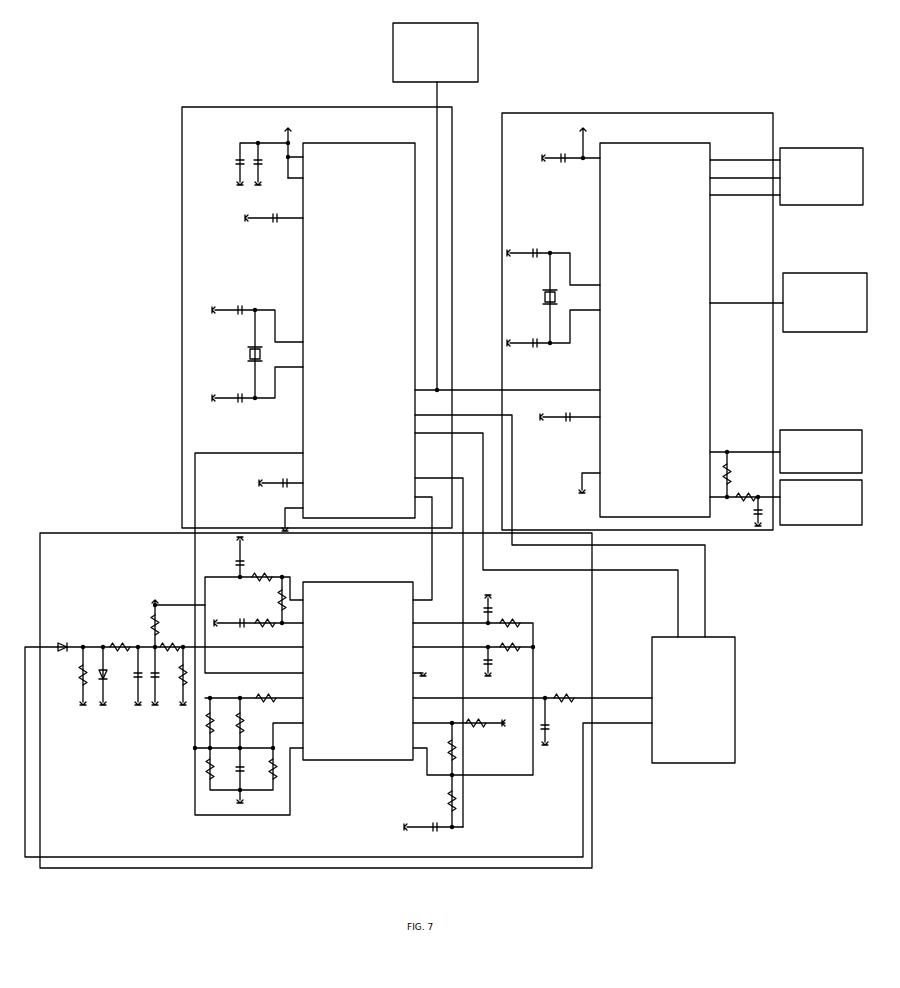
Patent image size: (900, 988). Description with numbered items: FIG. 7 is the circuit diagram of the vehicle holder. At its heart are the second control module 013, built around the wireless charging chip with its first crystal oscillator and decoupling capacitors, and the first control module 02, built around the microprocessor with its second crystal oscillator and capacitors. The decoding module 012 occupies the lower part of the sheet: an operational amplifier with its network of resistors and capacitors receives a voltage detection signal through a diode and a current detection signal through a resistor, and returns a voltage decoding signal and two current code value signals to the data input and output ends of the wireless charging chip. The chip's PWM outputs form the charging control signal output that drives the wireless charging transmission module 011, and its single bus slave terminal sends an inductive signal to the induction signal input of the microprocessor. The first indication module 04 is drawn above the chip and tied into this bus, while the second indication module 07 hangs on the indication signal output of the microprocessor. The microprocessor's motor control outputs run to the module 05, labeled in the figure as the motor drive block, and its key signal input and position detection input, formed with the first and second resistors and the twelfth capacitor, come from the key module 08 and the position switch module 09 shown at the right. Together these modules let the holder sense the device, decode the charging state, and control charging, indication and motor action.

The first control module 02 is at (773, 119).
The first indication module 04 is at (462, 23).
The key module 05 is at (850, 148).
The second indication module 07 is at (856, 273).
The key module 08 is at (864, 443).
The position switch module 09 is at (864, 490).
The wireless charging transmission module 011 is at (724, 637).
The decoding module 012 is at (592, 601).
The second control module 013 is at (452, 136).